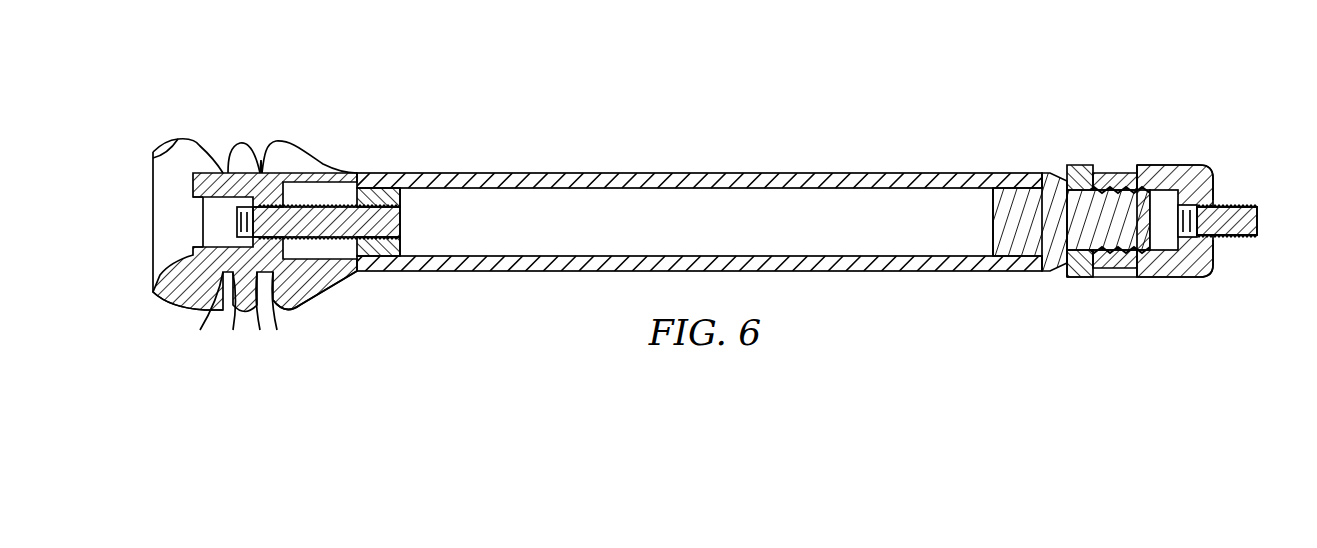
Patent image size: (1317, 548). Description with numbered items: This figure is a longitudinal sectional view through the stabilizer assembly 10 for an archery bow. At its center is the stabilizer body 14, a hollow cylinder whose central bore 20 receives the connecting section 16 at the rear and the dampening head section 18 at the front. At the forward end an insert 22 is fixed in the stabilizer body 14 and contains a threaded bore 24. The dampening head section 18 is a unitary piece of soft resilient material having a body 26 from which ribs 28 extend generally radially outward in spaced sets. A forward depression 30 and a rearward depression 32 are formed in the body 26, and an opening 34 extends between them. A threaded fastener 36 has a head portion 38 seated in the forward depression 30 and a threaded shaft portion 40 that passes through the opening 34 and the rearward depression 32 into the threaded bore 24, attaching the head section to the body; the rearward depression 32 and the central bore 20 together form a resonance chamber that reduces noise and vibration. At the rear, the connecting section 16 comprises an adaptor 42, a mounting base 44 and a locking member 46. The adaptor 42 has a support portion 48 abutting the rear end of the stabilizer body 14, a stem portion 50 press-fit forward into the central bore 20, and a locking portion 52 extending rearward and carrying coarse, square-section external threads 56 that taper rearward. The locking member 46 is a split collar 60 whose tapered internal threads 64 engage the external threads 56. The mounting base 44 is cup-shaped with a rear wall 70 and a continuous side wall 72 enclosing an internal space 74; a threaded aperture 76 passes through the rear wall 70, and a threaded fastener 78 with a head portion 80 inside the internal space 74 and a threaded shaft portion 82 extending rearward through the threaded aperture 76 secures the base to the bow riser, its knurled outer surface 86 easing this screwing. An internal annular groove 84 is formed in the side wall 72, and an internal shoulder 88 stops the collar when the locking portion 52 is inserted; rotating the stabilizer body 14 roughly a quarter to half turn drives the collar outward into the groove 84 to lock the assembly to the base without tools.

The stabilizer assembly 10 is at (516, 113).
The stabilizer body 14 is at (705, 173).
The connecting section 16 is at (1046, 287).
The dampening head section 18 is at (302, 143).
The central bore 20 is at (549, 233).
The insert 22 is at (396, 174).
The threaded bore 24 is at (393, 268).
The body 26 is at (210, 303).
The ribs 28 is at (198, 143).
The forward depression 30 is at (212, 233).
The rearward depression 32 is at (313, 190).
The opening 34 is at (261, 162).
The threaded fastener 36 is at (403, 222).
The head portion 38 is at (212, 235).
The threaded shaft portion 40 is at (338, 272).
The adaptor 42 is at (992, 212).
The mounting base 44 is at (1160, 278).
The locking member 46 is at (1150, 277).
The support portion 48 is at (1042, 172).
The stem portion 50 is at (1002, 198).
The locking portion 52 is at (1117, 180).
The external threads 56 is at (1173, 199).
The collar 60 is at (1093, 172).
The internal threads 64 is at (1066, 275).
The rear wall 70 is at (1212, 195).
The side wall 72 is at (1130, 270).
The internal space 74 is at (1213, 197).
The threaded aperture 76 is at (1213, 255).
The threaded fastener 78 is at (1258, 221).
The head portion 80 is at (1197, 277).
The threaded shaft portion 82 is at (1255, 237).
The internal annular groove 84 is at (1142, 180).
The knurled outer surface 86 is at (1090, 277).
The internal shoulder 88 is at (1188, 180).